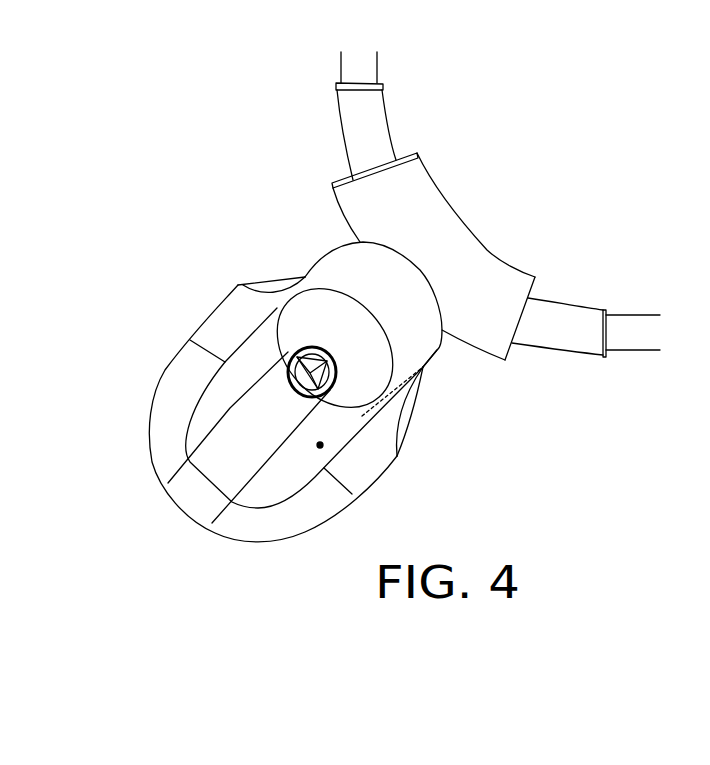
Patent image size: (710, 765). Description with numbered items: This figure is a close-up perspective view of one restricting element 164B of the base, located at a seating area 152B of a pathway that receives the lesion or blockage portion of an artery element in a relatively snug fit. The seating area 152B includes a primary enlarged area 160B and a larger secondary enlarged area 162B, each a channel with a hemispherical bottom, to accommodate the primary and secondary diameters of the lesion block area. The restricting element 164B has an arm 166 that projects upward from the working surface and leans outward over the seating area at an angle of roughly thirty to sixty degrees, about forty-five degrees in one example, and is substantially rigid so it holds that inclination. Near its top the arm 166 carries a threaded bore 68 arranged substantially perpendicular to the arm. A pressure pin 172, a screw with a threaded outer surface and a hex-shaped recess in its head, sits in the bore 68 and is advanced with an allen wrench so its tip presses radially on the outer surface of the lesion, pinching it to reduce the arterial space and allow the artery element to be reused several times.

The seating area 152B is at (471, 244).
The secondary enlarged area 162B is at (490, 312).
The primary enlarged area 160B is at (560, 333).
The threaded bore 68 is at (280, 315).
The restricting element 164B is at (273, 481).
The pressure pin 172 is at (310, 373).
The arm 166 is at (323, 445).